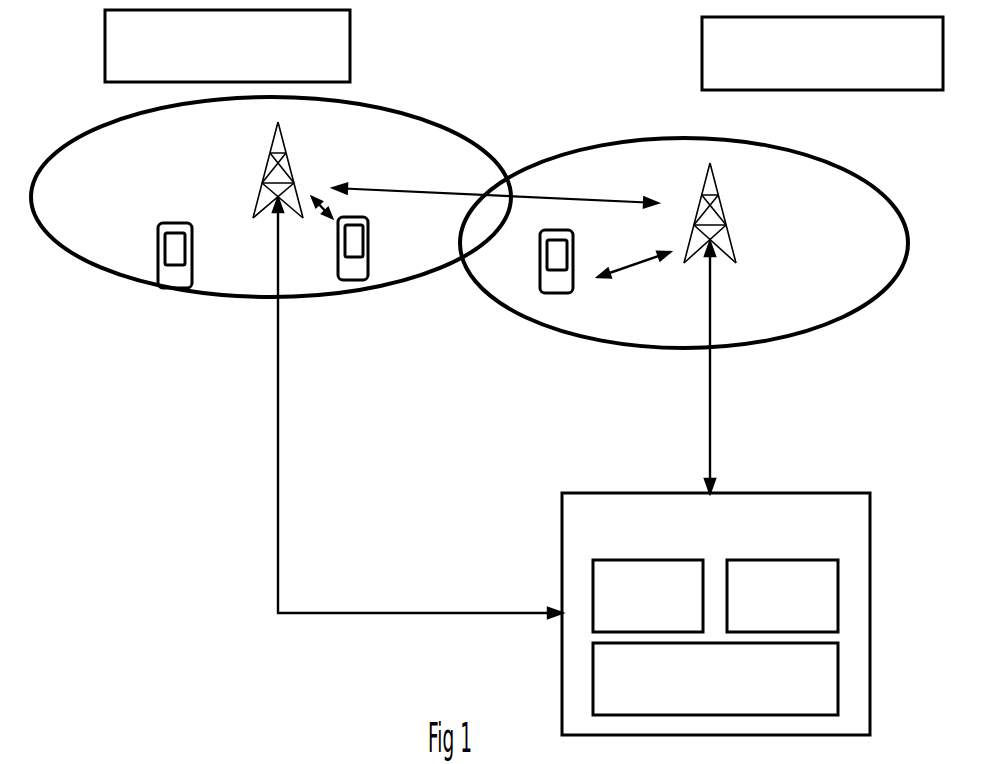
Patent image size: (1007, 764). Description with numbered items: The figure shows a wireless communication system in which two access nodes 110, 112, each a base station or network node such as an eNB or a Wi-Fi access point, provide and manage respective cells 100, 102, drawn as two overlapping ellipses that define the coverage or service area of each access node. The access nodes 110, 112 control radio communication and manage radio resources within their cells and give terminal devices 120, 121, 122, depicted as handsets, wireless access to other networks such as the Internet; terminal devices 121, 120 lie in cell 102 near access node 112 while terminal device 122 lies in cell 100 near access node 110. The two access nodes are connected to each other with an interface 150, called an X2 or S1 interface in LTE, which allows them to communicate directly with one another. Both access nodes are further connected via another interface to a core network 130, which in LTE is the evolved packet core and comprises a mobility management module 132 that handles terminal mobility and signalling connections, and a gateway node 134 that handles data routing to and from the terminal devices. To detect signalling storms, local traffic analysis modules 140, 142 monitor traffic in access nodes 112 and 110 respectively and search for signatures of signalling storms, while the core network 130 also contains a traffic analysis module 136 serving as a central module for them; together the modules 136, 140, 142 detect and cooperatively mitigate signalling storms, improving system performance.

The cell 100 is at (593, 150).
The cell 102 is at (72, 140).
The access node 110 is at (719, 186).
The access node 112 is at (288, 152).
The terminal device 120 is at (369, 236).
The terminal device 121 is at (193, 243).
The terminal device 122 is at (574, 251).
The core network 130 is at (716, 614).
The mobility management module (MME) 132 is at (648, 596).
The gateway (GW) node 134 is at (782, 596).
The traffic analysis module 136 is at (715, 679).
The traffic analysis module 140 is at (264, 177).
The traffic analysis module 142 is at (718, 197).
The interface 150 is at (422, 190).